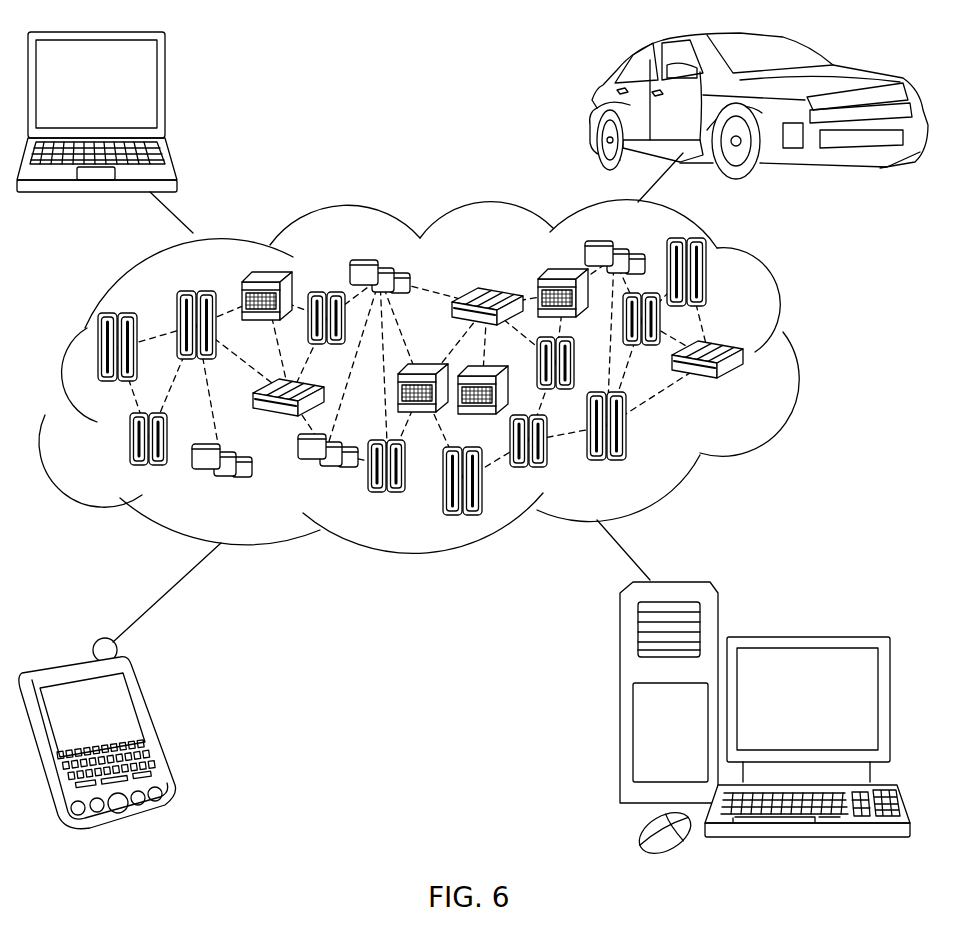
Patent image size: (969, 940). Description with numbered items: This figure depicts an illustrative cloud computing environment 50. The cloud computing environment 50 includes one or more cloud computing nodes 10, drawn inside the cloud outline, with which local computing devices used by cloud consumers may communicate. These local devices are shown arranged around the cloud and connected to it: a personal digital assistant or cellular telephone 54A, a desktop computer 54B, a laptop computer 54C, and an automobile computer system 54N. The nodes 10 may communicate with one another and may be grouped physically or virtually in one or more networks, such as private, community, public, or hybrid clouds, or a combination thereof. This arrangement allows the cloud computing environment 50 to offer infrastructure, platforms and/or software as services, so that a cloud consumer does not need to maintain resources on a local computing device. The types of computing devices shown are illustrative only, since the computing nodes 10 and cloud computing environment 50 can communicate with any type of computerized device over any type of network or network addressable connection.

The cloud computing node 10 is at (745, 384).
The cloud computing environment 50 is at (452, 377).
The personal digital assistant or cellular telephone 54A is at (157, 727).
The desktop computer 54B is at (803, 636).
The laptop computer 54C is at (165, 92).
The automobile computer system 54N is at (592, 106).